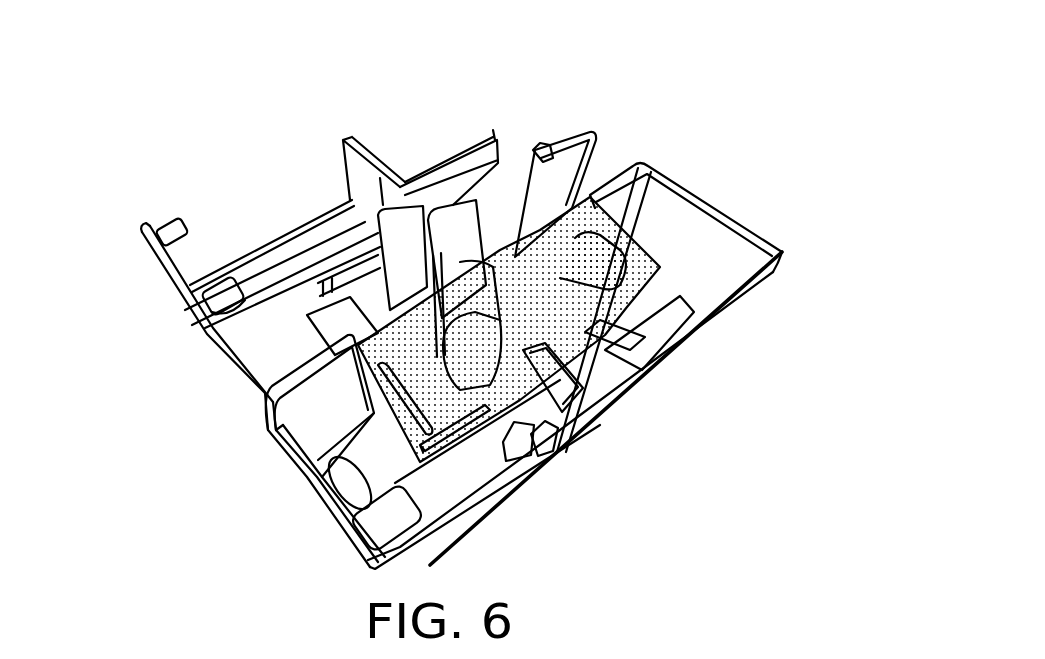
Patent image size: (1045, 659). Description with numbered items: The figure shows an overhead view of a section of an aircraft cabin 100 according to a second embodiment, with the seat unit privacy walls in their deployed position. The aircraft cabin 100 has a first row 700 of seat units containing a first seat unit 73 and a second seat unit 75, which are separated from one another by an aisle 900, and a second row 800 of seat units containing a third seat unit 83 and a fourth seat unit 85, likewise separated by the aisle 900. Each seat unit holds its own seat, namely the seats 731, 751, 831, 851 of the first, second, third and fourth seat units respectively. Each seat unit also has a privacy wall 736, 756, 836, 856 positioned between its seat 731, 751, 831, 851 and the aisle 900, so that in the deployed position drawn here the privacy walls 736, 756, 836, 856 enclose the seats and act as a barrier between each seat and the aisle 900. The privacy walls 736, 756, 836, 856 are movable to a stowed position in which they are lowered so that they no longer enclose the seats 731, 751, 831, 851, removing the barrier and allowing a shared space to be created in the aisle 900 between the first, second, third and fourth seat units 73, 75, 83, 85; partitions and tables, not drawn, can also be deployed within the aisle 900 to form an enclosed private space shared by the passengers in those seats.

The aircraft cabin 100 is at (192, 65).
The first row 700 is at (578, 494).
The first seat unit 73 is at (303, 539).
The second seat unit 75 is at (143, 169).
The seat 751 is at (213, 330).
The aisle 900 is at (285, 365).
The privacy wall 756 is at (402, 280).
The seat 731 is at (292, 435).
The fourth seat unit 85 is at (545, 115).
The seat 851 is at (547, 152).
The privacy wall 856 is at (453, 240).
The privacy wall 736 is at (458, 300).
The third seat unit 83 is at (752, 196).
The second row 800 is at (729, 354).
The seat 831 is at (595, 280).
The privacy wall 836 is at (593, 333).